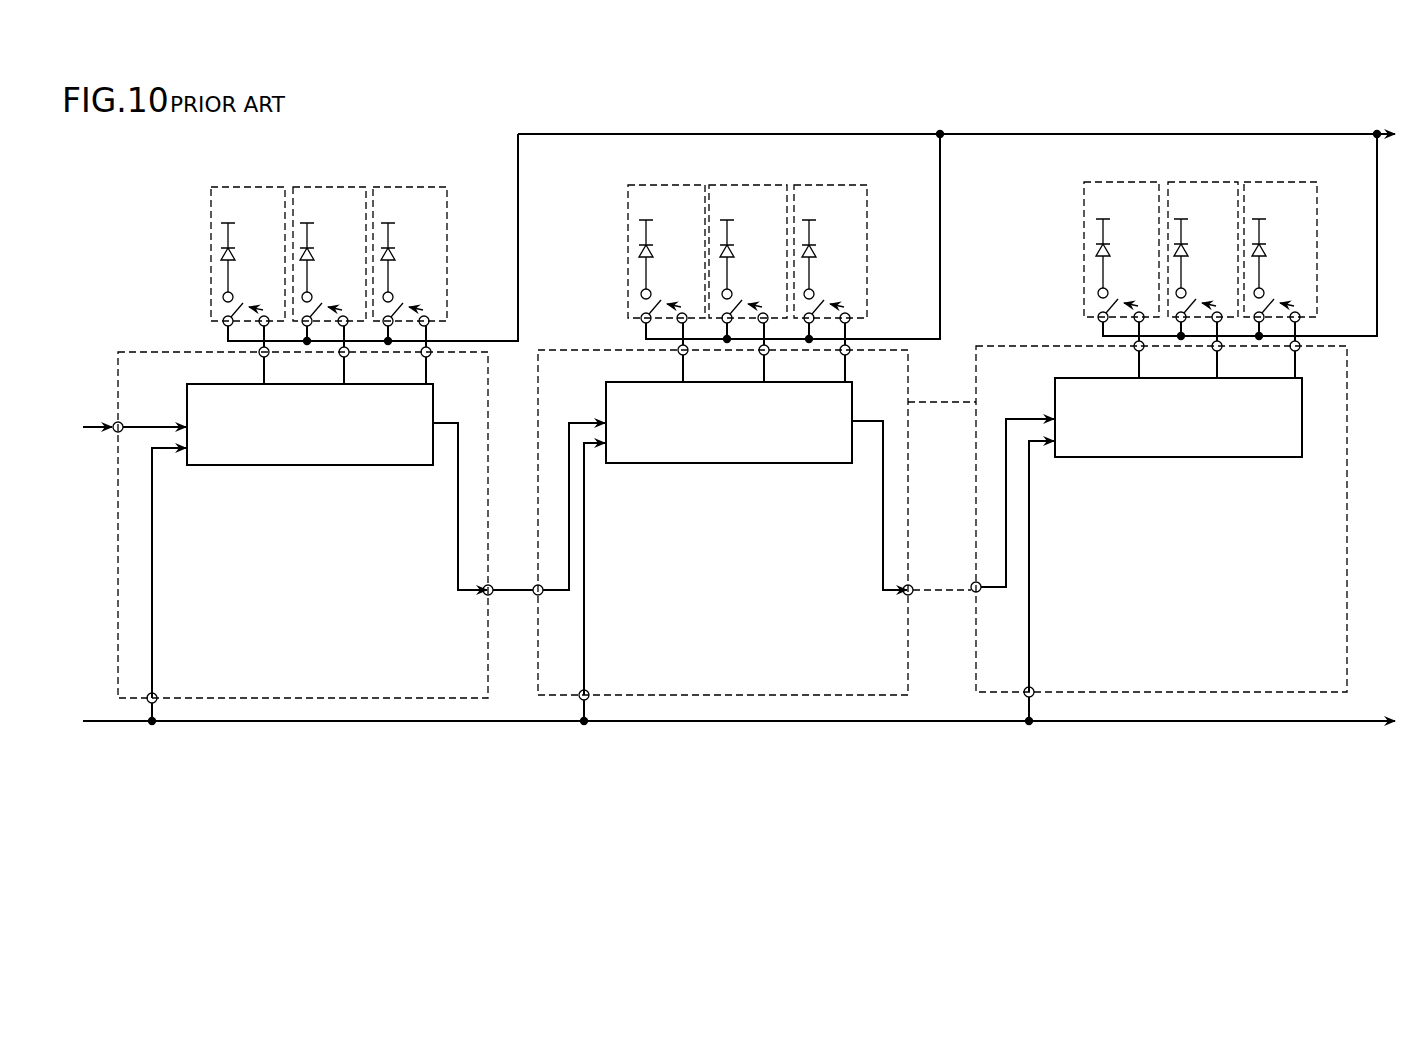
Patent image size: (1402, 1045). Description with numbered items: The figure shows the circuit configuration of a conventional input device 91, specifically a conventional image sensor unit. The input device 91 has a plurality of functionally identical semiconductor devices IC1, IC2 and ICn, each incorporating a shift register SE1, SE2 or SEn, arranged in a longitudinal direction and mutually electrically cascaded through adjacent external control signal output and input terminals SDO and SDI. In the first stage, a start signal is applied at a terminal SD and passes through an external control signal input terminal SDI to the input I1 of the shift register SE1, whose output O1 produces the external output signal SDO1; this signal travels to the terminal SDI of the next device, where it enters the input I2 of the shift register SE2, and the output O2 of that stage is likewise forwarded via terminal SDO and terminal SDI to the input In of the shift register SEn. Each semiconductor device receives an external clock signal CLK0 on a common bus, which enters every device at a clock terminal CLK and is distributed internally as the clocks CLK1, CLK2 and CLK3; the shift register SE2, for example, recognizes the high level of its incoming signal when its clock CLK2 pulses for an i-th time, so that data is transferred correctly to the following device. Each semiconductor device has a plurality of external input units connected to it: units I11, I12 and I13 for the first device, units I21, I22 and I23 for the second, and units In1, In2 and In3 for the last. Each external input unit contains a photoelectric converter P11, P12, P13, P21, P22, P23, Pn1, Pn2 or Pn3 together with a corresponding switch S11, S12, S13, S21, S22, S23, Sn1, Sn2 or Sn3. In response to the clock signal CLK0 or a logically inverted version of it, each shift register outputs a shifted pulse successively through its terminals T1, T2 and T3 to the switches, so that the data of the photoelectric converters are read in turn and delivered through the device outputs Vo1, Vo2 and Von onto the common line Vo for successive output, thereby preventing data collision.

The input device 91 is at (724, 783).
The semiconductor device IC1 is at (144, 351).
The semiconductor device IC2 is at (564, 349).
The semiconductor device ICn is at (1001, 345).
The shift register SE1 is at (310, 424).
The shift register SE2 is at (729, 422).
The shift register SEn is at (1178, 417).
The external input unit I11 is at (248, 241).
The external input unit I12 is at (329, 241).
The external input unit I13 is at (410, 241).
The external input unit I21 is at (666, 238).
The external input unit I22 is at (748, 238).
The external input unit I23 is at (830, 238).
The external input unit In1 is at (1121, 236).
The external input unit In2 is at (1203, 236).
The external input unit In3 is at (1280, 236).
The photoelectric converter P11 is at (249, 262).
The photoelectric converter P12 is at (328, 262).
The photoelectric converter P13 is at (409, 262).
The photoelectric converter P21 is at (668, 259).
The photoelectric converter P22 is at (749, 259).
The photoelectric converter P23 is at (830, 259).
The photoelectric converter Pn1 is at (1124, 258).
The photoelectric converter Pn2 is at (1202, 258).
The photoelectric converter Pn3 is at (1280, 258).
The switch S11 is at (253, 302).
The switch S12 is at (332, 302).
The switch S13 is at (413, 302).
The switch S21 is at (672, 300).
The switch S22 is at (753, 300).
The switch S23 is at (834, 300).
The switch Sn1 is at (1128, 298).
The switch Sn2 is at (1206, 298).
The switch Sn3 is at (1284, 298).
The switch control terminal T1 is at (686, 353).
The switch control terminal T2 is at (765, 353).
The switch control terminal T3 is at (845, 353).
The line Vo is at (956, 122).
The output of IC1 Vo1 is at (515, 338).
The output of IC2 Vo2 is at (937, 336).
The output of ICn Von is at (1374, 333).
The terminal SD is at (87, 441).
The external control signal input terminal SDI is at (115, 423).
The external control signal output terminal SDO is at (486, 597).
The external output signal SDO1 is at (470, 603).
The input of SE1 I1 is at (154, 405).
The input of SE2 I2 is at (574, 486).
The input of SEn In is at (1017, 484).
The output of SE1 O1 is at (460, 487).
The output of SE2 O2 is at (879, 485).
The external clock signal CLK0 is at (729, 735).
The clock input terminal CLK is at (157, 694).
The clock line of IC1 CLK1 is at (153, 654).
The clock signal CLK2 is at (585, 653).
The clock line of ICn CLK3 is at (1030, 651).